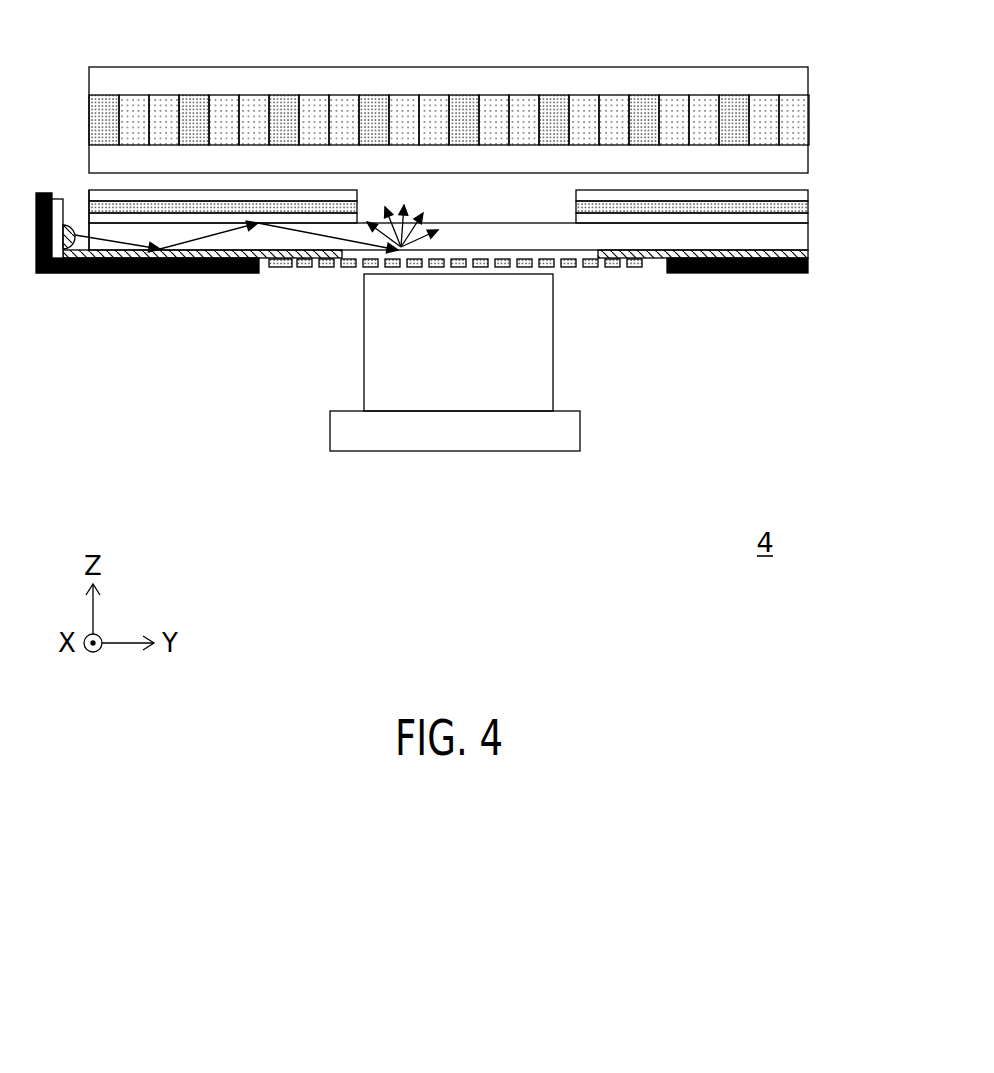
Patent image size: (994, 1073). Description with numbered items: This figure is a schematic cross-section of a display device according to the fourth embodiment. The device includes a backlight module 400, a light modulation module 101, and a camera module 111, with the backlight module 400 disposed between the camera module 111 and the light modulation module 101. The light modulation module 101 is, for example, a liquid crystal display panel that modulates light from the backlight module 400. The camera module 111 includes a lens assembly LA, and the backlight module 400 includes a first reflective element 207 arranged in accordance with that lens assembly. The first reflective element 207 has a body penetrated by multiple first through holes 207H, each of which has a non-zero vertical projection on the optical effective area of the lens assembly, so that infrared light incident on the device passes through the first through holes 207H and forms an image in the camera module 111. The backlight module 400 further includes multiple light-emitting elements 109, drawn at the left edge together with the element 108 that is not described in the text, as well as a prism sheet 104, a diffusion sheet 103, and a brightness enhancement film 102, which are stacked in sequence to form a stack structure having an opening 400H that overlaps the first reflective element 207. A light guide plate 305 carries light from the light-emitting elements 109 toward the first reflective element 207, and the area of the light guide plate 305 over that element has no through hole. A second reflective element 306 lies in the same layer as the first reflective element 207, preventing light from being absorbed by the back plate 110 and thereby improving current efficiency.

The light modulation module 101 is at (820, 67).
The brightness enhancement film 102 is at (802, 197).
The diffusion sheet 103 is at (802, 208).
The prism sheet 104 is at (802, 219).
The light source (LED) 108 is at (57, 200).
The light-emitting element 109 is at (73, 249).
The back plate 110 is at (798, 275).
The camera module 111 is at (373, 358).
The first reflective element 207 is at (643, 267).
The first through hole 207H is at (578, 263).
The light guide plate 305 is at (800, 238).
The second reflective element 306 is at (800, 255).
The backlight module 400 is at (883, 163).
The opening 400H is at (462, 203).